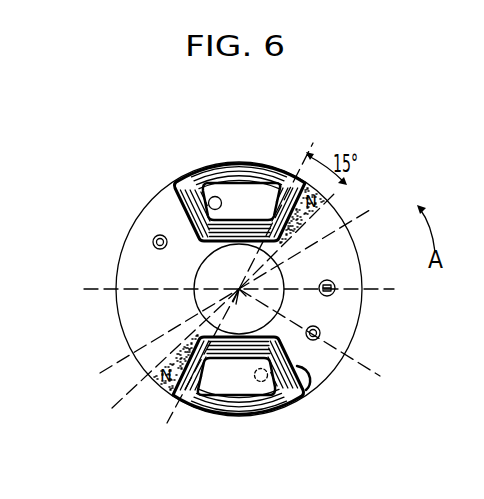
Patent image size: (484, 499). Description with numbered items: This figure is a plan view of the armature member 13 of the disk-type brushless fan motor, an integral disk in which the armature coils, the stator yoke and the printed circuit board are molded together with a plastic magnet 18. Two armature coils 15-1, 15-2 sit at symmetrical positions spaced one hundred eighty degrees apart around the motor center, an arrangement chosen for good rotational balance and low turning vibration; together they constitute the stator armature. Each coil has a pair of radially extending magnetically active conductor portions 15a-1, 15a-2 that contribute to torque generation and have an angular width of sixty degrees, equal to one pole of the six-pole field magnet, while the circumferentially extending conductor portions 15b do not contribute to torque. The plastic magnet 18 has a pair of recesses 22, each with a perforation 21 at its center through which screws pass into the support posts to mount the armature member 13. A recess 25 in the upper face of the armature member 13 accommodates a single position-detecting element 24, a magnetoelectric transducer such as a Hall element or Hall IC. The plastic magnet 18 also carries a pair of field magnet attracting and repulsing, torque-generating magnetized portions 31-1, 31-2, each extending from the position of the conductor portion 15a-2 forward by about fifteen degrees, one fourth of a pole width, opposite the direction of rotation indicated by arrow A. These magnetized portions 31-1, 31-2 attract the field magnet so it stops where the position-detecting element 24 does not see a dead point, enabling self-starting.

The armature member 13 is at (179, 157).
The armature coil 15-1 is at (235, 172).
The armature coil 15-2 is at (240, 346).
The radially extending magnetically active conductor portion 15a-1 is at (190, 228).
The radially extending magnetically active conductor portion 15a-2 is at (289, 190).
The circumferentially extending conductor portion 15b is at (250, 402).
The plastic magnet 18 is at (328, 358).
The perforation 21 is at (157, 249).
The recess 22 is at (152, 241).
The position-detecting element 24 is at (328, 280).
The recess 25 is at (335, 284).
The field magnet attracting and repulsing, torque-generating magnetized portion 31-1 is at (323, 199).
The field magnet attracting and repulsing, torque-generating magnetized portion 31-2 is at (155, 370).